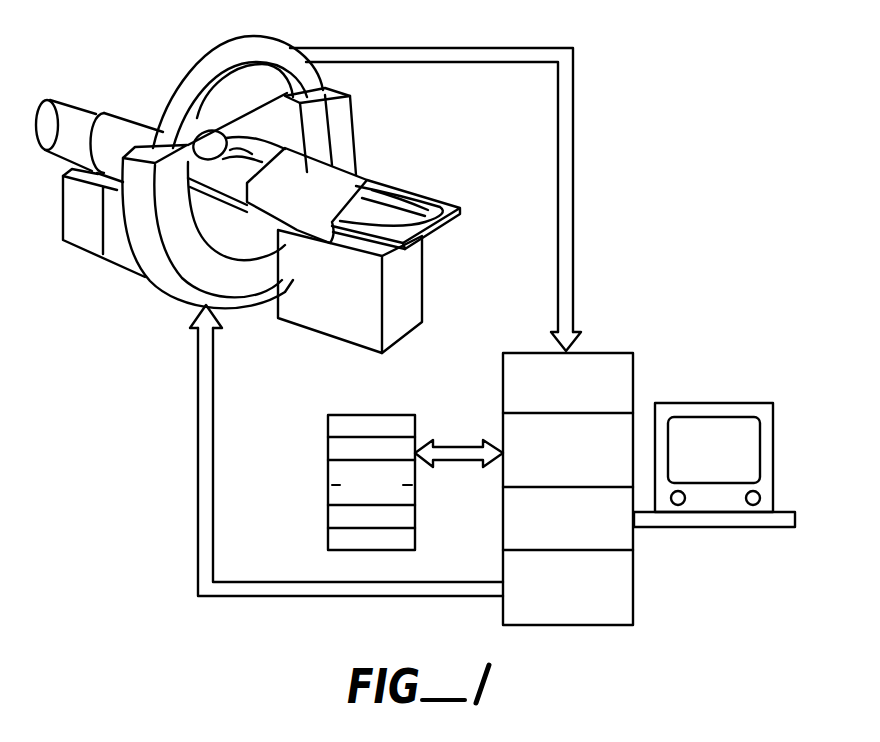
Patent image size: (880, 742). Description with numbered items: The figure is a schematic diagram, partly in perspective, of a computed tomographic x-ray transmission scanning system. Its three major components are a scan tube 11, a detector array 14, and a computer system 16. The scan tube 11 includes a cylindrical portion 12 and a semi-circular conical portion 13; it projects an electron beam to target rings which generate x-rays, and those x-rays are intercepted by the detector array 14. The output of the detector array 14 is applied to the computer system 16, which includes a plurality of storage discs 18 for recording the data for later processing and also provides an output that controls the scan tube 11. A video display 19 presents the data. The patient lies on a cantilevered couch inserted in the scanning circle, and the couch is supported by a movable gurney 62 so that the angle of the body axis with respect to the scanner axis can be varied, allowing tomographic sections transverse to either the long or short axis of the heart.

The scan tube 11 is at (145, 287).
The cylindrical portion 12 is at (93, 117).
The semi-circular conical portion 13 is at (230, 118).
The detector array 14 is at (281, 33).
The computer system 16 is at (625, 347).
The storage discs 18 is at (328, 453).
The video display 19 is at (722, 403).
The movable gurney 62 is at (413, 287).